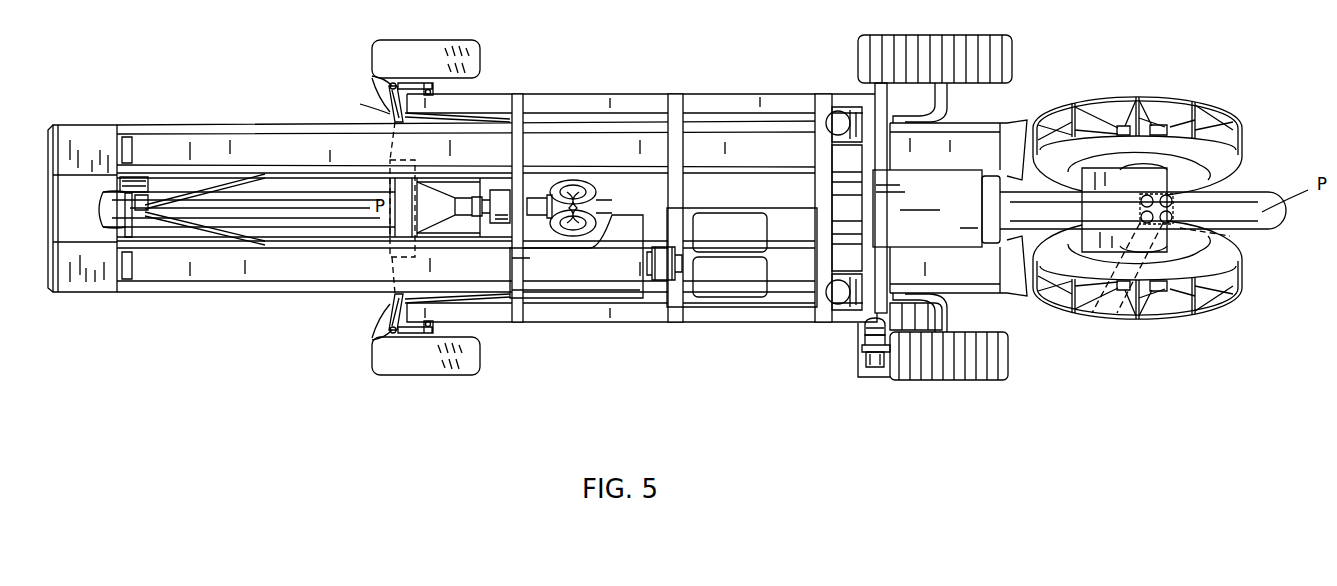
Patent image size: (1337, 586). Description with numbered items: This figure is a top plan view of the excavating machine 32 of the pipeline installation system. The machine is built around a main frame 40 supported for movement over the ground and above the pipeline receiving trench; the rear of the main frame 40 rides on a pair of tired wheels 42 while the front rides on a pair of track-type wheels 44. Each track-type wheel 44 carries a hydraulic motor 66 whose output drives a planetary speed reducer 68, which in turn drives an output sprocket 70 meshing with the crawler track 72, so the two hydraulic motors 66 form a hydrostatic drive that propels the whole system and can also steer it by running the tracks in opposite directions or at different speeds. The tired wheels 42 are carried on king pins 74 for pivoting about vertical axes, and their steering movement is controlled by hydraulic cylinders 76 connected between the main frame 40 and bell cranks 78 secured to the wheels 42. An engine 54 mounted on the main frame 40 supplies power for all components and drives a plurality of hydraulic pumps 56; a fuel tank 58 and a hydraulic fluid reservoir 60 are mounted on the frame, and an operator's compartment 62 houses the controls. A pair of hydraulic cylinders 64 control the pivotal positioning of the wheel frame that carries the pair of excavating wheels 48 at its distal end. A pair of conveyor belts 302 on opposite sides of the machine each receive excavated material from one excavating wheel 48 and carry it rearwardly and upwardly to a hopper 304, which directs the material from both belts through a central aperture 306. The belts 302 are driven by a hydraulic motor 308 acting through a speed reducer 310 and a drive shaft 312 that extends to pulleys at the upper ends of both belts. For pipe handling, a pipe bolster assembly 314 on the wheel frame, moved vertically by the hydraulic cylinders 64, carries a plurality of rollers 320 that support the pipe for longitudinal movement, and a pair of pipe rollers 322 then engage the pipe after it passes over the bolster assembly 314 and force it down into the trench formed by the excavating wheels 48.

The excavating machine 32 is at (728, 66).
The main frame 40 is at (584, 93).
The tired wheels 42 is at (442, 40).
The track-type wheels 44 is at (996, 44).
The excavating wheels 48 is at (1186, 98).
The engine 54 is at (552, 278).
The hydraulic pumps 56 is at (673, 276).
The fuel tank 58 is at (713, 289).
The hydraulic fluid reservoir 60 is at (723, 245).
The operator's compartment 62 is at (928, 204).
The hydraulic cylinders 64 is at (832, 112).
The hydraulic motor 66 is at (864, 336).
The planetary speed reducer 68 is at (870, 374).
The output sprocket 70 is at (862, 360).
The crawler track 72 is at (936, 365).
The king pins 74 is at (440, 90).
The hydraulic cylinders 76 is at (390, 114).
The bell cranks 78 is at (385, 84).
The conveyor belts 302 is at (216, 144).
The hopper 304 is at (86, 136).
The central aperture 306 is at (88, 250).
The hydraulic motor 308 is at (150, 214).
The speed reducer 310 is at (140, 178).
The drive shaft 312 is at (112, 213).
The pipe bolster assembly 314 is at (1213, 235).
The rollers 320 is at (1180, 190).
The pipe rollers 322 is at (588, 183).